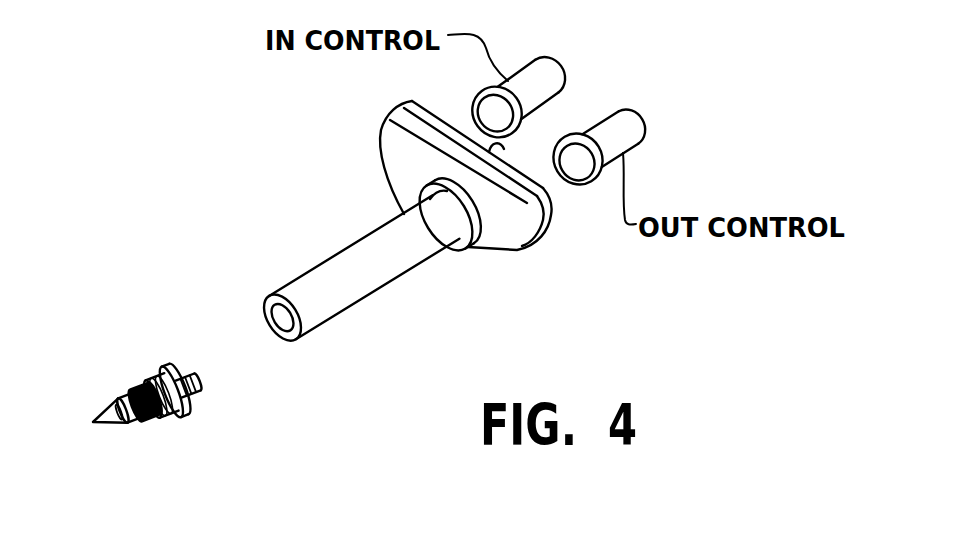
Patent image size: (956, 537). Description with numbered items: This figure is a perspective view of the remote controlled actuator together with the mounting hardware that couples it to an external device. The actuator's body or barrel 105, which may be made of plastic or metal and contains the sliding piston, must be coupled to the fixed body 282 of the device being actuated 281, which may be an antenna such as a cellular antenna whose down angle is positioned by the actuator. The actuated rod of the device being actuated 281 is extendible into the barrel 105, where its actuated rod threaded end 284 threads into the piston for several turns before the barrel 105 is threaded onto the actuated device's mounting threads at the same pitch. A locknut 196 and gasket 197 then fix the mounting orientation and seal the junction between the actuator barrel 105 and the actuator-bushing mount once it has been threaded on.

The barrel 105 is at (360, 302).
The locknut 196 is at (167, 418).
The gasket 197 is at (193, 400).
The device being actuated 281 is at (94, 424).
The fixed body of the device being actuated 282 is at (131, 386).
The actuated rod threaded end 284 is at (194, 363).